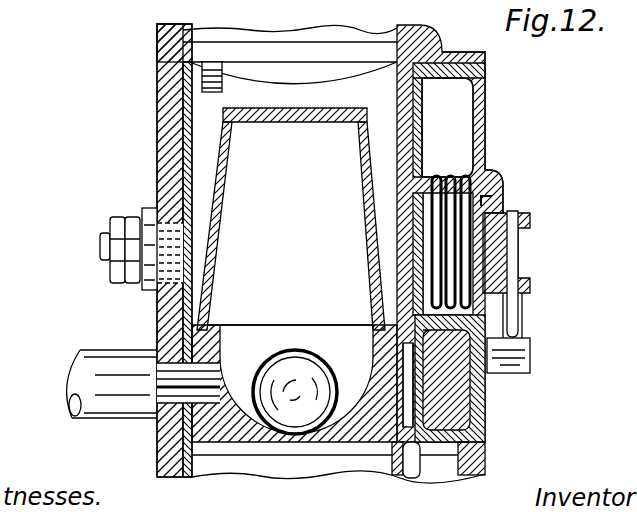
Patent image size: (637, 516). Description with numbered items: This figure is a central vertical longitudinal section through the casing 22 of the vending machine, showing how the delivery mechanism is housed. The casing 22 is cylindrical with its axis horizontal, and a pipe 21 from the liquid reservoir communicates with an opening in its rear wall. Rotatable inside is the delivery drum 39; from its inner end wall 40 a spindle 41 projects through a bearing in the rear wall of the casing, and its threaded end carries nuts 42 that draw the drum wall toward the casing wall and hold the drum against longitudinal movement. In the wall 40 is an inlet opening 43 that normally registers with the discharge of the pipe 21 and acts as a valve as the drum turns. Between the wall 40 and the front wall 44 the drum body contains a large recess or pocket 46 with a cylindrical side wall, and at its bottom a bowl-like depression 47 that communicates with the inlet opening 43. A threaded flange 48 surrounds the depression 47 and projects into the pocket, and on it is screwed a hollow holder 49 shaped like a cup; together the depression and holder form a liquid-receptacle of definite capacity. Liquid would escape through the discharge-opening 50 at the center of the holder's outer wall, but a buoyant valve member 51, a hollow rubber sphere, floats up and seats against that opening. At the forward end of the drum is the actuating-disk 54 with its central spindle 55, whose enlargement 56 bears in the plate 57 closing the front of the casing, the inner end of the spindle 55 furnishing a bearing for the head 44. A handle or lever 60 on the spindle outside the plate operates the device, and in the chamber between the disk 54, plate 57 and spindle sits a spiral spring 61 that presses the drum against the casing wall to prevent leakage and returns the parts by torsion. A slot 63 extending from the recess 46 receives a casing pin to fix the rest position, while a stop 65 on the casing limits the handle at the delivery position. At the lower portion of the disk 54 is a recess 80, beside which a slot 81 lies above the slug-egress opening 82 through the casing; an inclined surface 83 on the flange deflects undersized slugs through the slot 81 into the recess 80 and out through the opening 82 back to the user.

The pipe 21 is at (82, 350).
The casing 22 is at (485, 54).
The drum 39 is at (248, 442).
The inner end wall 40 is at (157, 151).
The spindle 41 is at (100, 248).
The nuts 42 is at (117, 217).
The inlet opening 43 is at (247, 338).
The front wall 44 is at (392, 288).
The recess or pocket 46 is at (337, 118).
The bowl-like depression 47 is at (353, 442).
The threaded flange 48 is at (372, 322).
The hollow holder 49 is at (212, 198).
The discharge-opening 50 is at (300, 112).
The valve member 51 is at (318, 354).
The actuating-disk 54 is at (441, 177).
The central spindle 55 is at (530, 256).
The enlargement 56 is at (488, 186).
The plate 57 is at (485, 106).
The handle or lever 60 is at (520, 318).
The spring 61 is at (492, 197).
The slot 63 is at (222, 68).
The stop 65 is at (530, 364).
The recess 80 is at (423, 346).
The slot 81 is at (423, 391).
The slug-egress opening 82 is at (418, 468).
The inclined surface 83 is at (415, 370).